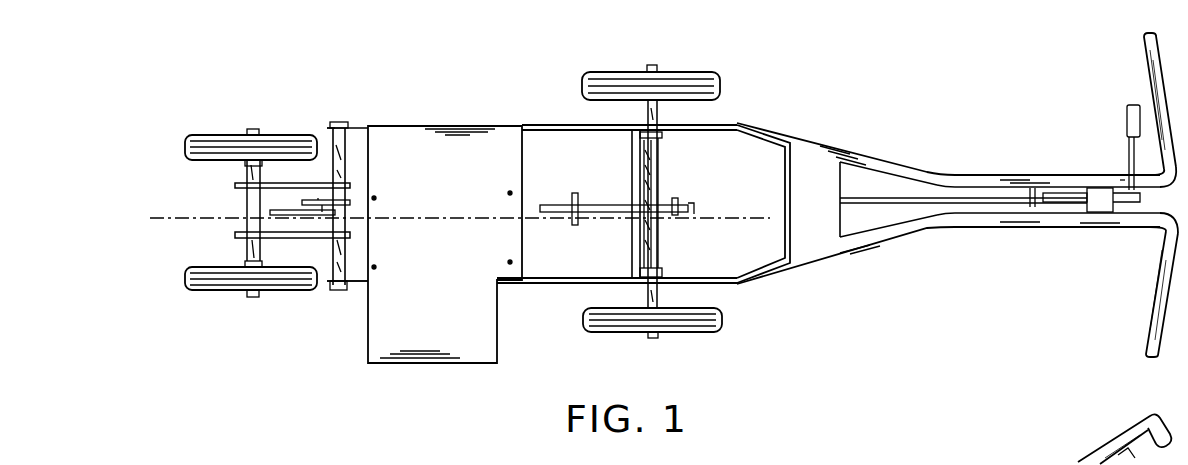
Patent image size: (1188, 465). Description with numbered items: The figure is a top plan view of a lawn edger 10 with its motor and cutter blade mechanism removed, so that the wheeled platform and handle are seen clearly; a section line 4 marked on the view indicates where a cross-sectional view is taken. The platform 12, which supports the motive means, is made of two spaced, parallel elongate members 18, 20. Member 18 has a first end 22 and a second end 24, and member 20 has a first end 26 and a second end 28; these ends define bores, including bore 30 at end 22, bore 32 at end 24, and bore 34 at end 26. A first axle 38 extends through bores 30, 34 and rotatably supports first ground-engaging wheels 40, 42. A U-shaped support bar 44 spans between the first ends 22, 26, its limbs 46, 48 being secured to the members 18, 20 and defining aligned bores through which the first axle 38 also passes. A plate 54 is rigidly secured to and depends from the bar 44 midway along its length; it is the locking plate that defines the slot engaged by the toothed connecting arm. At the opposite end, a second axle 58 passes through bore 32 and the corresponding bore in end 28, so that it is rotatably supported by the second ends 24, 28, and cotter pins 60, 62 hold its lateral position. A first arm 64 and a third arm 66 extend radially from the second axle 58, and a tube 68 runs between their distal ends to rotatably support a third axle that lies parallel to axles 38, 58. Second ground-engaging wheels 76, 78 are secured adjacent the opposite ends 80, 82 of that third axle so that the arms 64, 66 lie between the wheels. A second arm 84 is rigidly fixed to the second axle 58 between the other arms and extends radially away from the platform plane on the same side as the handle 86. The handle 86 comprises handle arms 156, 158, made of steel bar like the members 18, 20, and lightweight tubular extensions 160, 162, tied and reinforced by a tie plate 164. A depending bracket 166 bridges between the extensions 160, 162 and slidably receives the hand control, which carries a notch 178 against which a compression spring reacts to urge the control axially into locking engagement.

The section line 4- 4 is at (243, 221).
The lawn edger 10 is at (497, 114).
The platform 12 is at (465, 343).
The elongate member 18 is at (367, 128).
The elongate member 20 is at (358, 286).
The first end 22 is at (612, 131).
The second end 24 is at (333, 125).
The first end 26 is at (660, 284).
The second end 28 is at (328, 291).
The bore 30 is at (660, 124).
The bore 32 is at (341, 122).
The bore 34 is at (580, 301).
The first axle 38 is at (657, 229).
The first ground-engaging wheel 40 is at (617, 73).
The first ground-engaging wheel 42 is at (672, 333).
The U-shaped support bar 44 is at (631, 243).
The limb 46 is at (656, 141).
The limb 48 is at (658, 270).
The plate 54 is at (648, 202).
The second axle 58 is at (333, 158).
The cotter pin 60 is at (333, 142).
The cotter pin 62 is at (305, 291).
The first arm 64 is at (245, 188).
The third arm 66 is at (240, 234).
The tube 68 is at (248, 250).
The second ground engaging wheel 76 is at (186, 147).
The second ground engaging wheel 78 is at (212, 291).
The end of third axle 80 is at (245, 133).
The end of third axle 82 is at (253, 299).
The second arm 84 is at (360, 222).
The handle 86 is at (1128, 80).
The handle arm 156 is at (822, 140).
The handle arm 158 is at (758, 281).
The extension 160 is at (944, 140).
The extension 162 is at (934, 232).
The tie plate 164 is at (825, 245).
The depending bracket 166 is at (1078, 462).
The notch 178 is at (1030, 200).